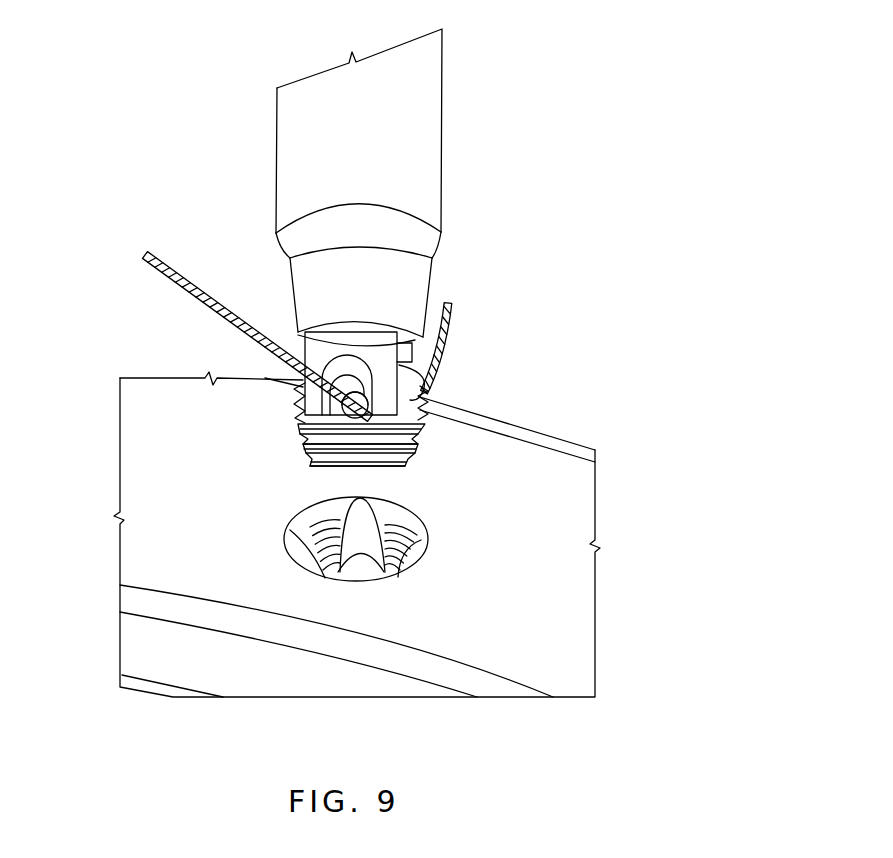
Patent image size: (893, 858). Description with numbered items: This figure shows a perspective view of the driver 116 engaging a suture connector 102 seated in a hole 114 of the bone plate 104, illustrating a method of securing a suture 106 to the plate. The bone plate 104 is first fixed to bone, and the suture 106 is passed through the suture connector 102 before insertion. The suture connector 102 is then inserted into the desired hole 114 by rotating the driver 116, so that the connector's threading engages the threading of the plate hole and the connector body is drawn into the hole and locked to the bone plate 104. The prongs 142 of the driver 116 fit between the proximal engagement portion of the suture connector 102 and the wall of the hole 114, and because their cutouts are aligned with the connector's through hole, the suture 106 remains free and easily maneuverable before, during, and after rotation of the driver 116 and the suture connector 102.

The driver 116 is at (413, 172).
The suture 106 is at (148, 252).
The suture connector 102 is at (425, 438).
The prongs 142 is at (313, 402).
The bone plate 104 is at (525, 580).
The holes 114 is at (315, 522).